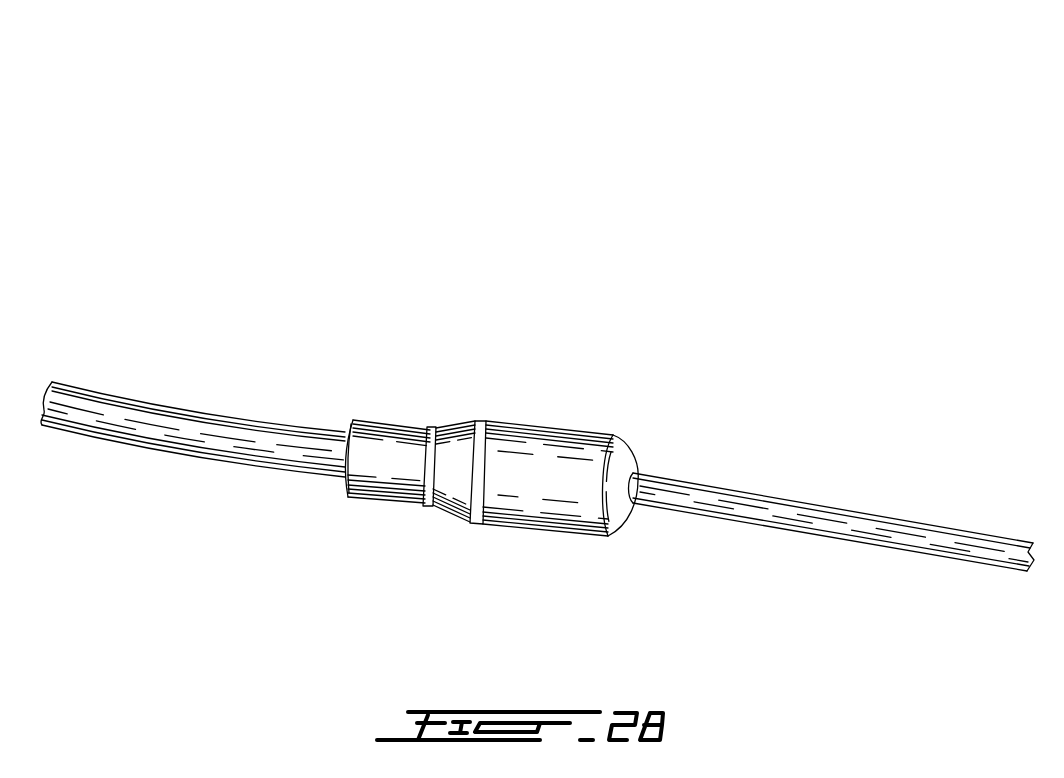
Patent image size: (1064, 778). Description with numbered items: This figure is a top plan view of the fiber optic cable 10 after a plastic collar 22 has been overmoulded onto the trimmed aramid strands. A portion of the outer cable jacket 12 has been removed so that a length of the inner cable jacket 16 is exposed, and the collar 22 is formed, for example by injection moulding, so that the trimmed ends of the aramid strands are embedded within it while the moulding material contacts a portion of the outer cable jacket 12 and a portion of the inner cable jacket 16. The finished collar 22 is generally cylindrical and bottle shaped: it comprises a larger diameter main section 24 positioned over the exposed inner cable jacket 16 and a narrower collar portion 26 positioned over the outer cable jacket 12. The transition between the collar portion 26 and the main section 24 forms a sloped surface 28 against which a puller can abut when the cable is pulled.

The fiber optic cable 10 is at (545, 228).
The outer cable jacket 12 is at (153, 423).
The inner cable jacket 16 is at (812, 513).
The plastic collar 22 is at (512, 442).
The main section 24 is at (583, 438).
The collar portion 26 is at (387, 472).
The sloped surface 28 is at (463, 422).